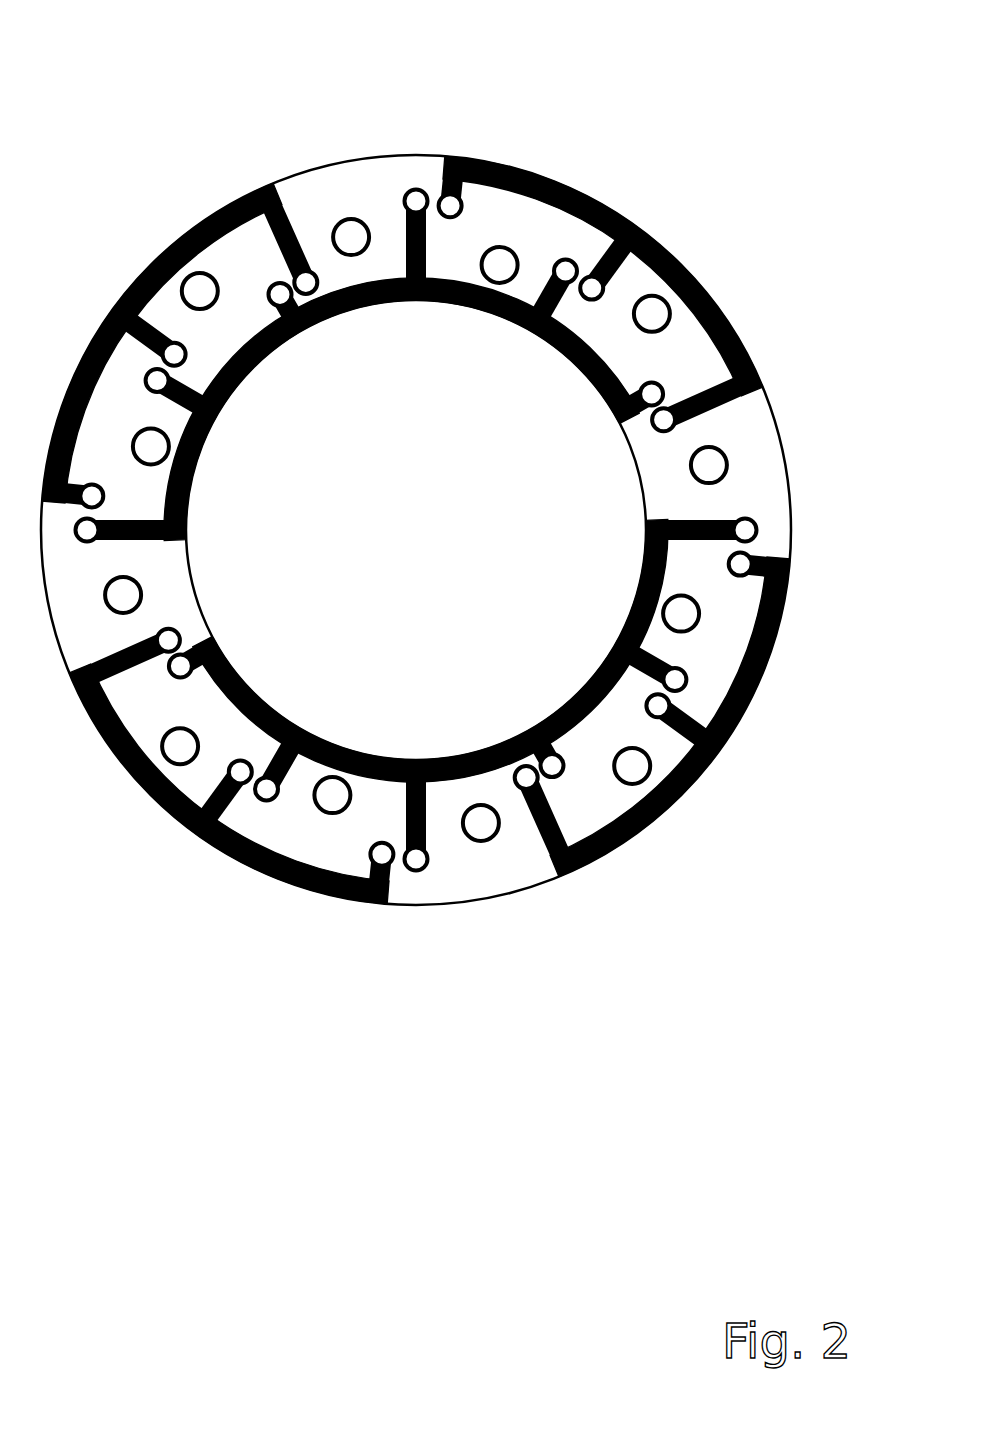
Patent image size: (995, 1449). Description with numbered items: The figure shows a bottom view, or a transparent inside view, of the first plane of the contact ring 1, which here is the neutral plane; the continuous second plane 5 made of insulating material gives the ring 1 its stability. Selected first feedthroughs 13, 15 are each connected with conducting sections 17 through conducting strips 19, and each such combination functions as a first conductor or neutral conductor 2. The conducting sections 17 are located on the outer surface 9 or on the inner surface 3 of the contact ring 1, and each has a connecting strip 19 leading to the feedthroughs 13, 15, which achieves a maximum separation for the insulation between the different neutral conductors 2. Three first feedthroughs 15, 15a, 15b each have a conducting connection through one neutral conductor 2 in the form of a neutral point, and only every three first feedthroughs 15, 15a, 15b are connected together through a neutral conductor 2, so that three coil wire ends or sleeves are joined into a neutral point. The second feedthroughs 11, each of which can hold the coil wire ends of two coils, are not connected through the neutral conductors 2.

The contact ring 1 is at (455, 51).
The neutral conductor 2 is at (541, 346).
The inner surface 3 is at (303, 324).
The second plane 5 is at (514, 877).
The outer surface 9 is at (678, 797).
The second feedthrough 11 is at (200, 285).
The first feedthrough 13 is at (566, 268).
The first feedthrough 15 is at (577, 298).
The first feedthrough 15a is at (652, 404).
The first feedthrough 15b is at (408, 197).
The conducting section 17 is at (311, 875).
The conducting strip 19 is at (232, 805).